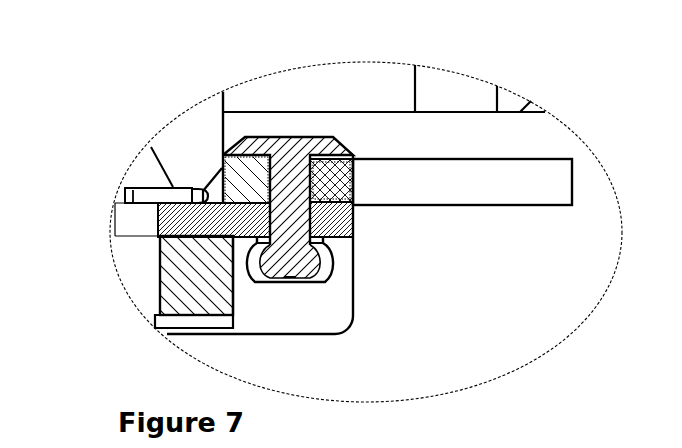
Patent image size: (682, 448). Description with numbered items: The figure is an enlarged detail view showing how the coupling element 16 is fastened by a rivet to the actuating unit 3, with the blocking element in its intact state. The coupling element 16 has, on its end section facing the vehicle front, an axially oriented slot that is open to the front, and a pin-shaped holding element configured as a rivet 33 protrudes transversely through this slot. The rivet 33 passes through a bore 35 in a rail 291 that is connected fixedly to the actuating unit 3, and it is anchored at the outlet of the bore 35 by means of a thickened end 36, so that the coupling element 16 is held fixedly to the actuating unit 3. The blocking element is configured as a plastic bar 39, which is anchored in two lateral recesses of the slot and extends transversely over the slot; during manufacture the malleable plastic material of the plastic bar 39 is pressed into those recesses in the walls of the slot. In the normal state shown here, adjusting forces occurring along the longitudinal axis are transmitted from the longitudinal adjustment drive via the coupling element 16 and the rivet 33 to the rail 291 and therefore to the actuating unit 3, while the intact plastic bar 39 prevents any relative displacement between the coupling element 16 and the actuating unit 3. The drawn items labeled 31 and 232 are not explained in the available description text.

The actuating unit 3 is at (128, 262).
The coupling element 16 is at (222, 165).
The mounting plate 31 is at (555, 178).
The rivet 33 is at (282, 165).
The bore 35 is at (355, 227).
The thickened end 36 is at (320, 280).
The plastic bar 39 is at (333, 175).
The base body 232 is at (190, 280).
The rail 291 is at (206, 224).